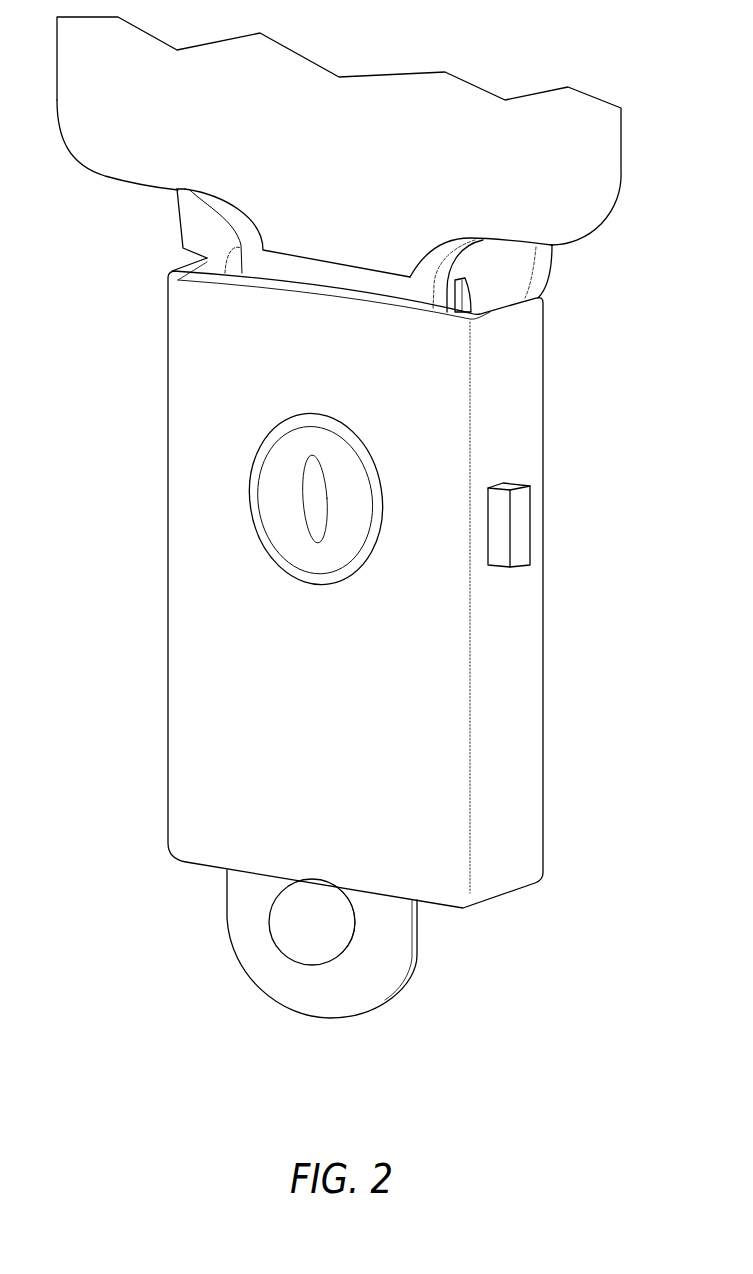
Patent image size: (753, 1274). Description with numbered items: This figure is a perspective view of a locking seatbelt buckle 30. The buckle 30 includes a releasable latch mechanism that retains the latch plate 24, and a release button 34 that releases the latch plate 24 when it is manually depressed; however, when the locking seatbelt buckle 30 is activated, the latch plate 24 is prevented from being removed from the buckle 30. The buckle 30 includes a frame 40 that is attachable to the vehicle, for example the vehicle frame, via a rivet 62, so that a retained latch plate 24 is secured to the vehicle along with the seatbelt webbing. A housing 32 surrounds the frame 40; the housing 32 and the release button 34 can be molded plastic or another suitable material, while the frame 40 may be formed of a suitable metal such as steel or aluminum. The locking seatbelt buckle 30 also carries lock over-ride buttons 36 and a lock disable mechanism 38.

The latch plate 24 is at (417, 292).
The locking seatbelt buckle 30 is at (385, 583).
The housing 32 is at (527, 786).
The release button 34 is at (178, 237).
The lock over-ride buttons 36 is at (530, 520).
The lock disable mechanism 38 is at (273, 498).
The frame 40 is at (337, 944).
The rivet 62 is at (297, 925).